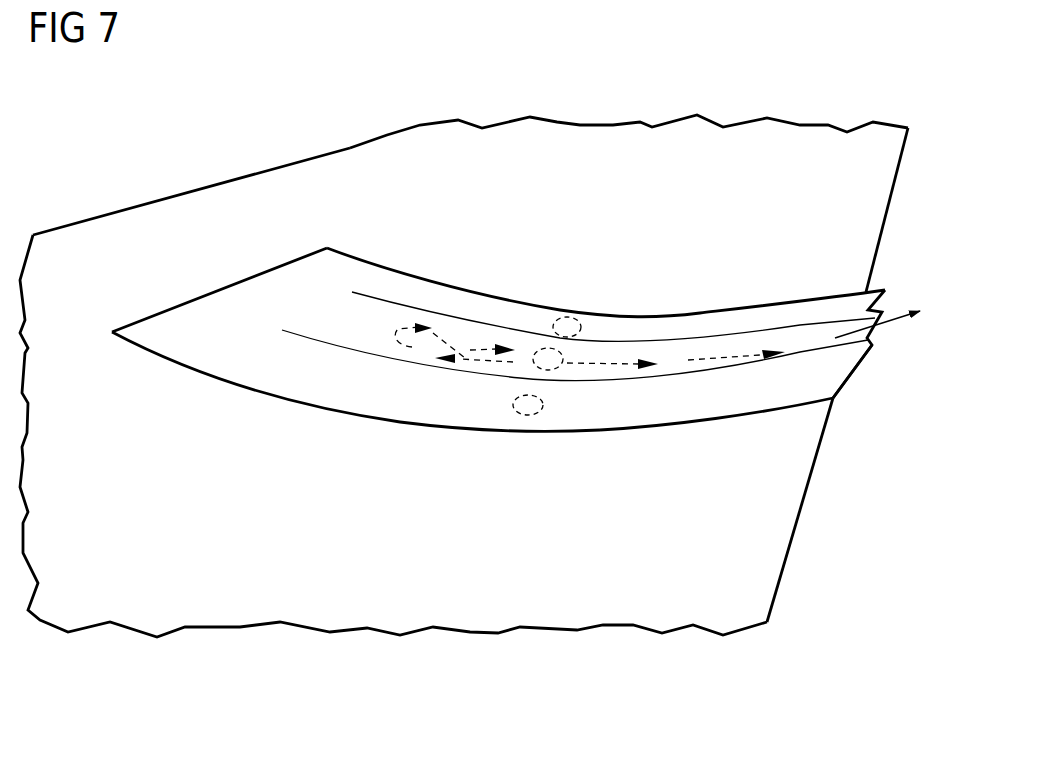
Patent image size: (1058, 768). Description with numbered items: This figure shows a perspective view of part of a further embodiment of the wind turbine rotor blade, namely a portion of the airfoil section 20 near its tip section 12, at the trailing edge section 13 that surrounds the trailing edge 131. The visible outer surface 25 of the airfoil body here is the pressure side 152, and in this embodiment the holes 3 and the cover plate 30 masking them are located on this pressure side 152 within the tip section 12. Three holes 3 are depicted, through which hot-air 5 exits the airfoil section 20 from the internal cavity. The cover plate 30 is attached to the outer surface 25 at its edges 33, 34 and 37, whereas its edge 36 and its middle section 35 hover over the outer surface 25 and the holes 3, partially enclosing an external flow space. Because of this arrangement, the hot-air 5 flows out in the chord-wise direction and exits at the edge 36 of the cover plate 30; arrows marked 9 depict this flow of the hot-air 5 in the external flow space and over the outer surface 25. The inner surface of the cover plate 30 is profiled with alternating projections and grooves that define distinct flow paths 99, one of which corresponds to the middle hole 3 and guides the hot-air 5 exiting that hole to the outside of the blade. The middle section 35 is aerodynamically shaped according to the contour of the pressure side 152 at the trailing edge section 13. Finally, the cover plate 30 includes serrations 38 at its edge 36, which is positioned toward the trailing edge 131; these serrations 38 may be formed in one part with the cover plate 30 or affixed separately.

The airfoil section 20 is at (100, 174).
The tip section 12 is at (203, 177).
The pressure side 152 is at (673, 132).
The serrations 38 is at (886, 274).
The trailing edge 131 is at (812, 495).
The trailing edge section 13 is at (780, 550).
The outer surface 25 is at (458, 575).
The cover plate 30 is at (318, 432).
The edge 33 is at (228, 285).
The edge 34 is at (427, 282).
The middle section 35 is at (645, 407).
The edge 37 is at (730, 422).
The distinct flow paths 99 is at (817, 370).
The edge 36 is at (855, 408).
The flow 9 is at (470, 357).
The holes 3 is at (548, 350).
The hot-air 5 is at (891, 322).